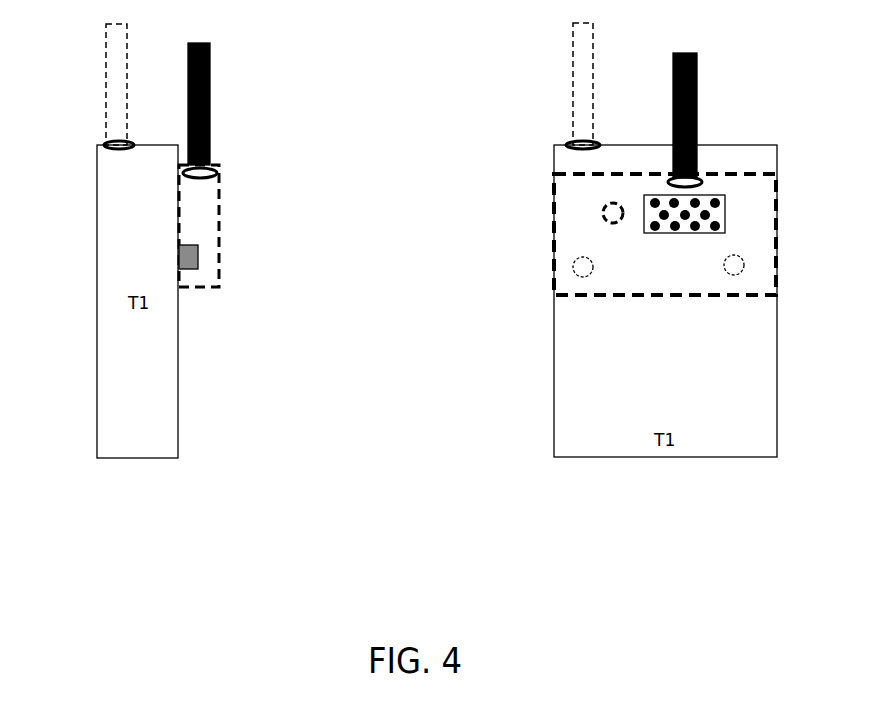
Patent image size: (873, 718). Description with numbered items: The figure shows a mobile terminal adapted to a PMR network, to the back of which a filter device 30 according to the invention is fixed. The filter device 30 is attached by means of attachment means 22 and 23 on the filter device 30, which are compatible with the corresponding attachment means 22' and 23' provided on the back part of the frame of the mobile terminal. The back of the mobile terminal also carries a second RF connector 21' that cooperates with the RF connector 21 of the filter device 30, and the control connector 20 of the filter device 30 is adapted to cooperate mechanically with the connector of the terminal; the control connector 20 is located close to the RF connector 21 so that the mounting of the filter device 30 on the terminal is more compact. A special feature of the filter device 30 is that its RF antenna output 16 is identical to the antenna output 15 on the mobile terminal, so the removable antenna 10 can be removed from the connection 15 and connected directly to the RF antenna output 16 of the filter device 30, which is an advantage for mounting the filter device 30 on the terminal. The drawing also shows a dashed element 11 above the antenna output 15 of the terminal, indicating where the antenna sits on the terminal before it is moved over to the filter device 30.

The removable antenna 10 is at (210, 60).
The antenna 11 is at (110, 78).
The antenna output 15 is at (117, 148).
The RF antenna output 16 is at (217, 175).
The control connector 20 is at (668, 233).
The RF connector 21 is at (545, 220).
The second RF connector 21' is at (545, 220).
The attachment means 22 is at (544, 276).
The attachment means 22' is at (231, 295).
The attachment means 23 is at (774, 253).
The attachment means 23' is at (231, 295).
The filter device 30 is at (219, 223).